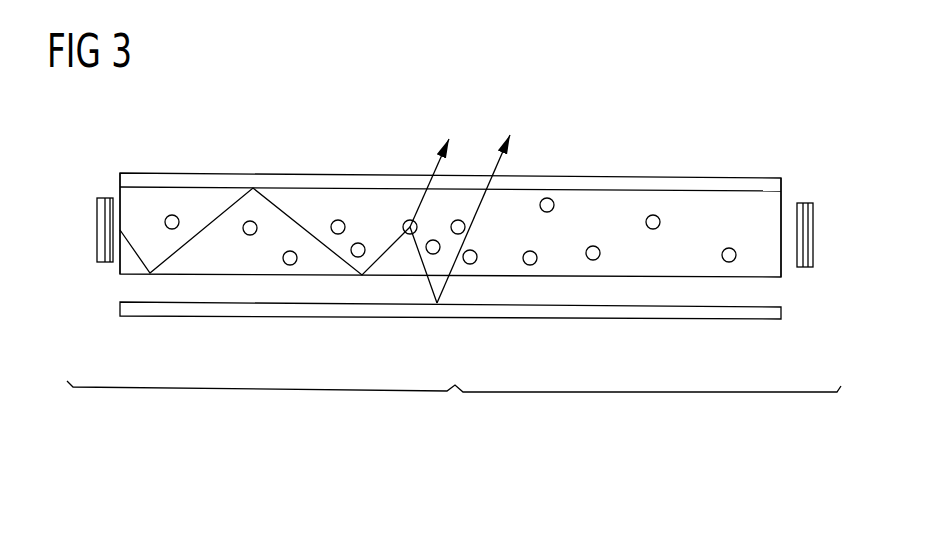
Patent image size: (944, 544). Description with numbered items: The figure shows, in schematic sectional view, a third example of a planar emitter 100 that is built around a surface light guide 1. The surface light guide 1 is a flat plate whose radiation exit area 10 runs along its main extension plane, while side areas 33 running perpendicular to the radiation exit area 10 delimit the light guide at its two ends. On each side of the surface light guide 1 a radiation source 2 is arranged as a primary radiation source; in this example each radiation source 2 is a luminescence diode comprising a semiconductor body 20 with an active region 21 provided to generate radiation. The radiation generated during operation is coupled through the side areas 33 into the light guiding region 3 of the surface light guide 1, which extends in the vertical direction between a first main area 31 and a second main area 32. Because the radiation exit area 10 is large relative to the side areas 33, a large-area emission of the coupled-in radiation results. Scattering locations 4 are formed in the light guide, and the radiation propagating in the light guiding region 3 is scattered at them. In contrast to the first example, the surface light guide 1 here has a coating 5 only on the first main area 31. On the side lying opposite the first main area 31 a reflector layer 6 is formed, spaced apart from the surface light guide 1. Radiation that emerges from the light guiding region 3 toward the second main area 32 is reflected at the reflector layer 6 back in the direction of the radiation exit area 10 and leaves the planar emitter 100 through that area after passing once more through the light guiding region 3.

The surface light guide 1 is at (758, 130).
The radiation source 2 is at (97, 252).
The light guiding region 3 is at (773, 204).
The scattering locations 4 is at (417, 219).
The coating 5 is at (702, 186).
The reflector layer 6 is at (720, 313).
The radiation exit area 10 is at (612, 172).
The semiconductor body 20 is at (97, 233).
The active region 21 is at (97, 204).
The first main area 31 is at (534, 183).
The second main area 32 is at (551, 280).
The side areas 33 is at (120, 188).
The planar emitter 100 is at (454, 406).